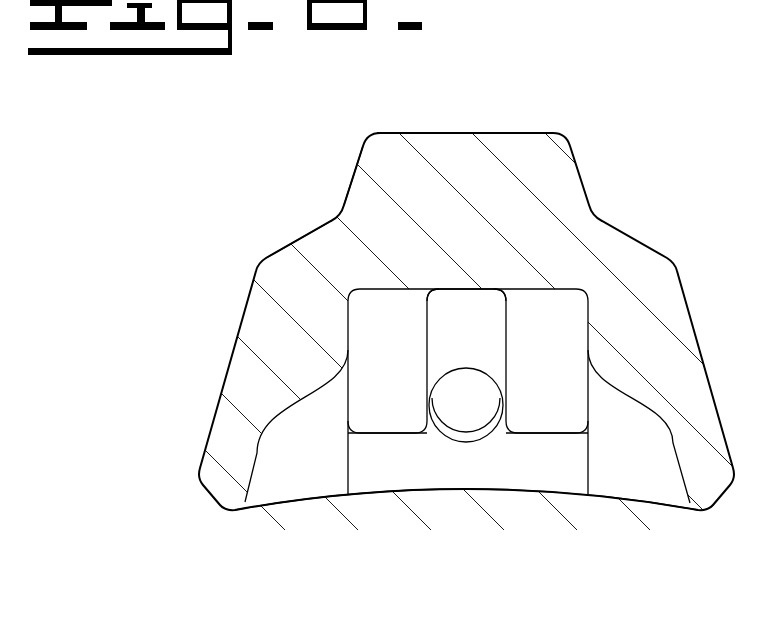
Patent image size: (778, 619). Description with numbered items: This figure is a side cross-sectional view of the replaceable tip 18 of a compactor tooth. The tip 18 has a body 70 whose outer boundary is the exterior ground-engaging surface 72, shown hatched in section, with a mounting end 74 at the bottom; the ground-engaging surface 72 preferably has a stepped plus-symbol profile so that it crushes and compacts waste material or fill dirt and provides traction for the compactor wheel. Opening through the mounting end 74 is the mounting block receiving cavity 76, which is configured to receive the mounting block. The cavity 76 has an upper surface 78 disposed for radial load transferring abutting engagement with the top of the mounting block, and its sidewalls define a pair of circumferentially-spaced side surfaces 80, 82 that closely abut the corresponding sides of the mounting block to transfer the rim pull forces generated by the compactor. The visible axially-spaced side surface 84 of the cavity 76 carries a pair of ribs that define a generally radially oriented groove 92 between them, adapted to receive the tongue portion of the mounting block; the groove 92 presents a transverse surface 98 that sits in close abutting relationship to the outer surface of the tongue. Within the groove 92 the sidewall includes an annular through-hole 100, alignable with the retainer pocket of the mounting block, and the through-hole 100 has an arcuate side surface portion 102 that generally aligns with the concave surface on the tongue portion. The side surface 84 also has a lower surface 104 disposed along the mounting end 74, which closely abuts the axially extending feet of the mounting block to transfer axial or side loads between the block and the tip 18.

The replaceable tip 18 is at (588, 108).
The body 70 is at (290, 265).
The exterior ground-engaging surface 72 is at (345, 190).
The mounting end 74 is at (663, 500).
The mounting block receiving cavity 76 is at (470, 470).
The upper surface 78 is at (390, 293).
The circumferentially-spaced side surface 80 is at (347, 473).
The circumferentially-spaced side surface 82 is at (585, 487).
The axially-spaced side surface 84 is at (533, 475).
The groove 92 is at (490, 313).
The transverse surface 98 is at (437, 328).
The annular through-hole 100 is at (447, 421).
The arcuate side surface portion 102 is at (447, 387).
The lower surface 104 is at (430, 475).